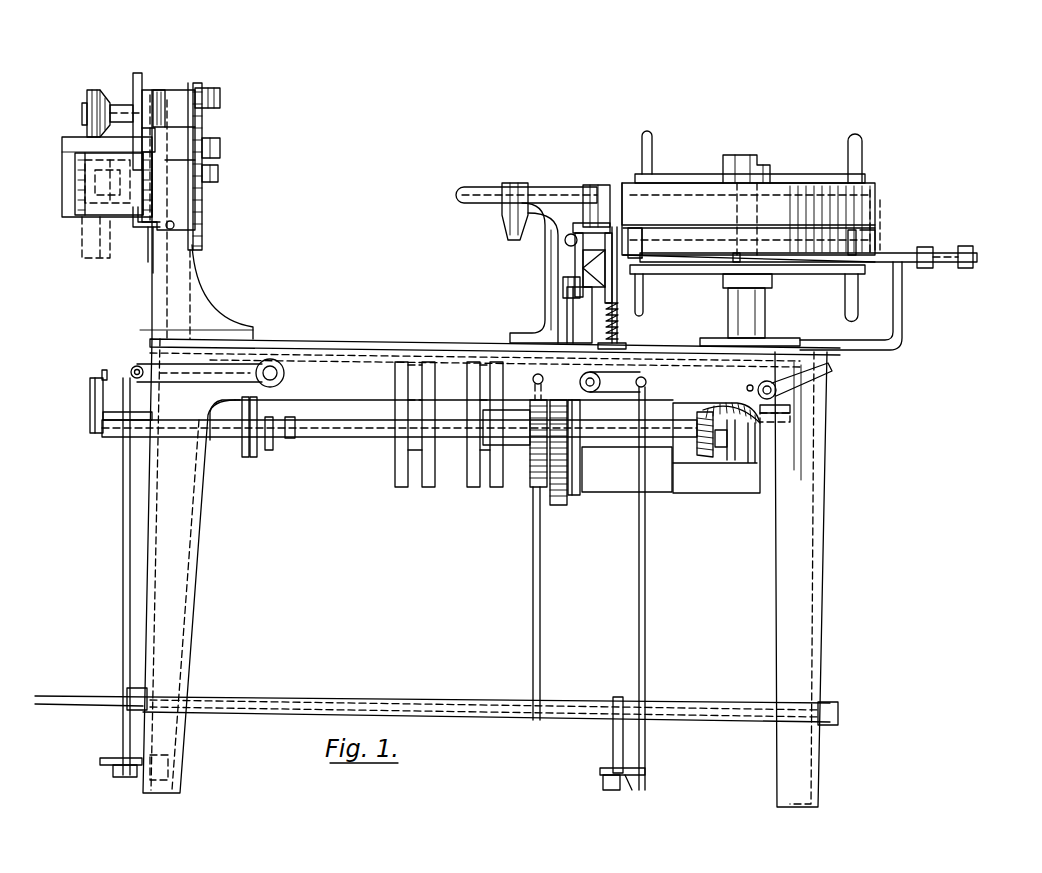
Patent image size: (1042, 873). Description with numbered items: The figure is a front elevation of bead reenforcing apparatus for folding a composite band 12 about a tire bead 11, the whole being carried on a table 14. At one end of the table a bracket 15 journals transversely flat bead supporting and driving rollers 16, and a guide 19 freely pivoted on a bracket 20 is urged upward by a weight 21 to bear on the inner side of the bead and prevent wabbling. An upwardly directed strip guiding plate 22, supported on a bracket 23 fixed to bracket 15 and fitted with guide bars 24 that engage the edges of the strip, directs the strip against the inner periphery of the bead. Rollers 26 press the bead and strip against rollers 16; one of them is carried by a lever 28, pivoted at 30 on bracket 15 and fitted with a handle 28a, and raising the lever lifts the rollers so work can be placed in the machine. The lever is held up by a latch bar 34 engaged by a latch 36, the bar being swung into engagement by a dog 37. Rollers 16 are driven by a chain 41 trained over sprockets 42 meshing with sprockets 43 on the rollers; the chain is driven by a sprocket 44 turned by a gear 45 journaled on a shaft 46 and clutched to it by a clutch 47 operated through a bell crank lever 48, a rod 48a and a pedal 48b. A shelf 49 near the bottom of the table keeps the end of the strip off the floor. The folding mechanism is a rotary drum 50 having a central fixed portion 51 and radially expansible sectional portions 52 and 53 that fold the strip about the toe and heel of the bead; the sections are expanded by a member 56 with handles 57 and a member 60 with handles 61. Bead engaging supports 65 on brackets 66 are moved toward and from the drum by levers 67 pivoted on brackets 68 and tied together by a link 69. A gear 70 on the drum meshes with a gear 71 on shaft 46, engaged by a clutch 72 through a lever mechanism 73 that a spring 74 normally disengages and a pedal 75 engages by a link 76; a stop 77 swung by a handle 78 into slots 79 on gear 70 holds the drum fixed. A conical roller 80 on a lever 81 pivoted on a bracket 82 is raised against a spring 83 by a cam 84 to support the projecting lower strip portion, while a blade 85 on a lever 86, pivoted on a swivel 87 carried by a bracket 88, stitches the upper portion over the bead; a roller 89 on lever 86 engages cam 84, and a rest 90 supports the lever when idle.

The bead 11 is at (103, 255).
The composite band 12 is at (82, 248).
The table 14 is at (368, 362).
The bracket 15 is at (200, 302).
The bead supporting and driving rollers 16 is at (63, 143).
The guide 19 is at (100, 378).
The bracket 20 is at (120, 421).
The weight 21 is at (92, 428).
The strip guiding plate 22 is at (75, 200).
The bracket 23 is at (135, 230).
The guide bars 24 is at (76, 207).
The rollers 26 is at (88, 98).
The lever 28 is at (120, 89).
The handle 28a is at (143, 160).
The pivot 30 is at (142, 95).
The latch bar 34 is at (143, 158).
The latch 36 is at (149, 255).
The dog 37 is at (154, 268).
The chain 41 is at (197, 243).
The sprockets 42 is at (207, 88).
The sprockets 43 is at (202, 183).
The sprocket 44 is at (187, 440).
The gear 45 is at (560, 505).
The shaft 46 is at (366, 437).
The clutch 47 is at (246, 458).
The bell crank lever 48 is at (141, 364).
The rod 48a is at (122, 530).
The pedal 48b is at (110, 758).
The shelf 49 is at (95, 697).
The rotary drum 50 is at (640, 190).
The central fixed portion 51 is at (880, 235).
The sectional portions 52 is at (878, 196).
The sectional portions 53 is at (878, 253).
The member 56 is at (695, 178).
The handles 57 is at (652, 145).
The member 60 is at (693, 266).
The handles 61 is at (644, 303).
The bead engaging supports 65 is at (641, 232).
The brackets 66 is at (693, 248).
The levers 67 is at (893, 262).
The brackets 68 is at (903, 312).
The link 69 is at (975, 256).
The gear 70 is at (760, 425).
The gear 71 is at (706, 432).
The clutch 72 is at (575, 497).
The lever mechanism 73 is at (646, 381).
The spring 74 is at (532, 480).
The pedal 75 is at (645, 772).
The link 76 is at (646, 600).
The stop 77 is at (790, 398).
The handle 78 is at (830, 371).
The slots 79 is at (790, 418).
The conical roller 80 is at (605, 270).
The lever 81 is at (618, 313).
The bracket 82 is at (563, 287).
The spring 83 is at (622, 333).
The cam 84 is at (575, 268).
The blade 85 is at (512, 228).
The lever 86 is at (490, 190).
The swivel 87 is at (600, 185).
The bracket 88 is at (567, 320).
The roller 89 is at (569, 234).
The rest 90 is at (545, 276).